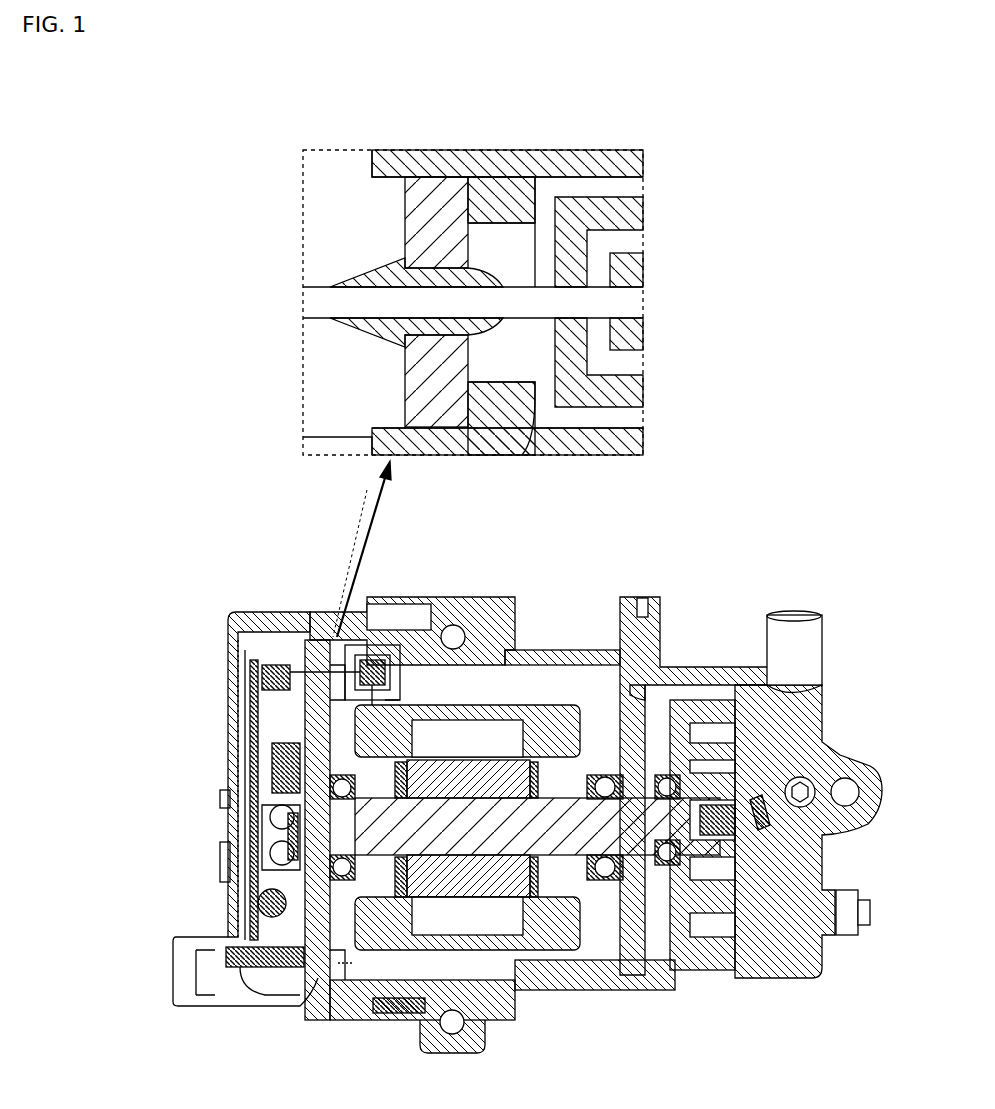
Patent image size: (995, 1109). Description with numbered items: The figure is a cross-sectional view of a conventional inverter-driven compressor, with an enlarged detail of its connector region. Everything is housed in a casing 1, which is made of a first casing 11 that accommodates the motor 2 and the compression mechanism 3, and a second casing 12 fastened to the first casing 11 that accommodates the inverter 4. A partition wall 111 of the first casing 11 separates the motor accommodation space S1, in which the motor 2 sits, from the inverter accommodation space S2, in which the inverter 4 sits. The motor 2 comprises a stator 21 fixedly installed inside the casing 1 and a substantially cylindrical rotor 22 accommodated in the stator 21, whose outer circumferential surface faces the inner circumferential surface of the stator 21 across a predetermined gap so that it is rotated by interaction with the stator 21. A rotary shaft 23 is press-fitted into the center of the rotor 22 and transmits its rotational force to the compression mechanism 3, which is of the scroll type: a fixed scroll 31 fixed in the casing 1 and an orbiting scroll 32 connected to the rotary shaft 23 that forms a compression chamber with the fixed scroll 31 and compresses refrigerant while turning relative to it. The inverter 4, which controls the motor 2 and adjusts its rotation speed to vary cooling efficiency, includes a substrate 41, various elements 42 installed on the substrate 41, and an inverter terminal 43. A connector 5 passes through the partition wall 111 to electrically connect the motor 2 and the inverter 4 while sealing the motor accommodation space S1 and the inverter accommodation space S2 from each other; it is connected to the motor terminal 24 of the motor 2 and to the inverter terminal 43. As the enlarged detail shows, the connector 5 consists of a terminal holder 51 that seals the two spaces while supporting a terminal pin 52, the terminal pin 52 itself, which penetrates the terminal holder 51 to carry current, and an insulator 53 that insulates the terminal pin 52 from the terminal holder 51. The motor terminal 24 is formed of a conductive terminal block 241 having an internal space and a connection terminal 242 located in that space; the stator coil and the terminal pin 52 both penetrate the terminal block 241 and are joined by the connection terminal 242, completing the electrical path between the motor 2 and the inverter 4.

The casing 1 is at (293, 531).
The first casing 11 is at (318, 612).
The partition wall 111 is at (443, 162).
The second casing 12 is at (258, 612).
The motor 2 is at (540, 531).
The stator 21 is at (449, 704).
The rotor 22 is at (492, 760).
The rotary shaft 23 is at (546, 798).
The motor terminal 24 is at (724, 208).
The terminal block 241 is at (627, 213).
The connection terminal 242 is at (627, 273).
The compression mechanism 3 is at (758, 534).
The fixed scroll 31 is at (752, 672).
The orbiting scroll 32 is at (695, 676).
The inverter 4 is at (160, 680).
The substrate 41 is at (240, 797).
The elements 42 is at (248, 853).
The inverter terminal 43 is at (246, 678).
The connector 5 is at (233, 232).
The terminal holder 51 is at (410, 215).
The terminal pin 52 is at (328, 299).
The insulator 53 is at (403, 347).
The motor accommodation space S1 is at (345, 963).
The inverter accommodation space S2 is at (238, 665).